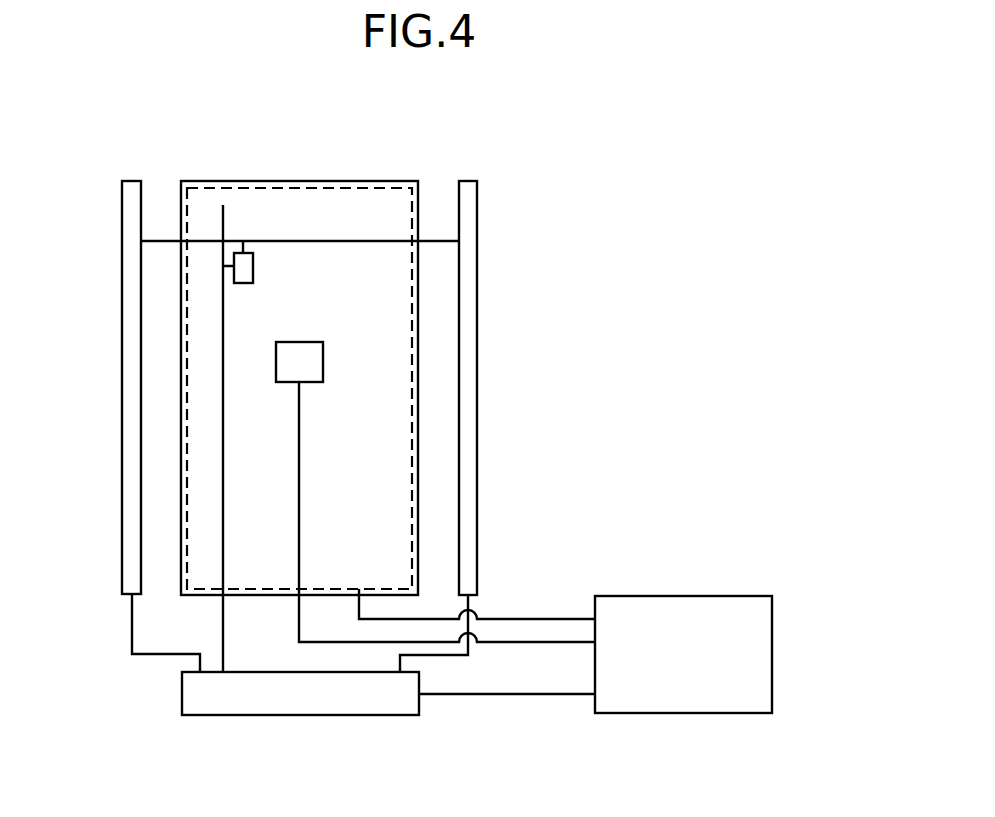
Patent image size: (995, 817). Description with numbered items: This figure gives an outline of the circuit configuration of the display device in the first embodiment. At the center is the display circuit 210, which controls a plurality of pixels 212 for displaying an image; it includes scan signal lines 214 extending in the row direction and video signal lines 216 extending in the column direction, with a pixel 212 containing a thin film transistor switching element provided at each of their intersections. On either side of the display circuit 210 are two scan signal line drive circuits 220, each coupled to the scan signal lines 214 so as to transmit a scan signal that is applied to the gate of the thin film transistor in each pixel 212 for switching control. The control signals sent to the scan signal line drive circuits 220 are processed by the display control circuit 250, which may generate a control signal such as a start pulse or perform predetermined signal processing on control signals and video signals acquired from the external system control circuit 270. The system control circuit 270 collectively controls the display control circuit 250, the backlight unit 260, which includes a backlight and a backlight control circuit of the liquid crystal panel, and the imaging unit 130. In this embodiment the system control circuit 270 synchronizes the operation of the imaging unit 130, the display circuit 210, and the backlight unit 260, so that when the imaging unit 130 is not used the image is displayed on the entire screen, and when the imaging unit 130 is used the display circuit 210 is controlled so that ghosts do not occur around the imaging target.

The imaging unit 130 is at (316, 353).
The display circuit 210 is at (311, 181).
The pixel 212 is at (244, 267).
The scan signal line 214 is at (385, 240).
The video signal line 216 is at (223, 368).
The scan signal line drive circuit 220 is at (130, 502).
The display control circuit 250 is at (182, 693).
The backlight unit 260 is at (226, 182).
The system control circuit 270 is at (682, 605).